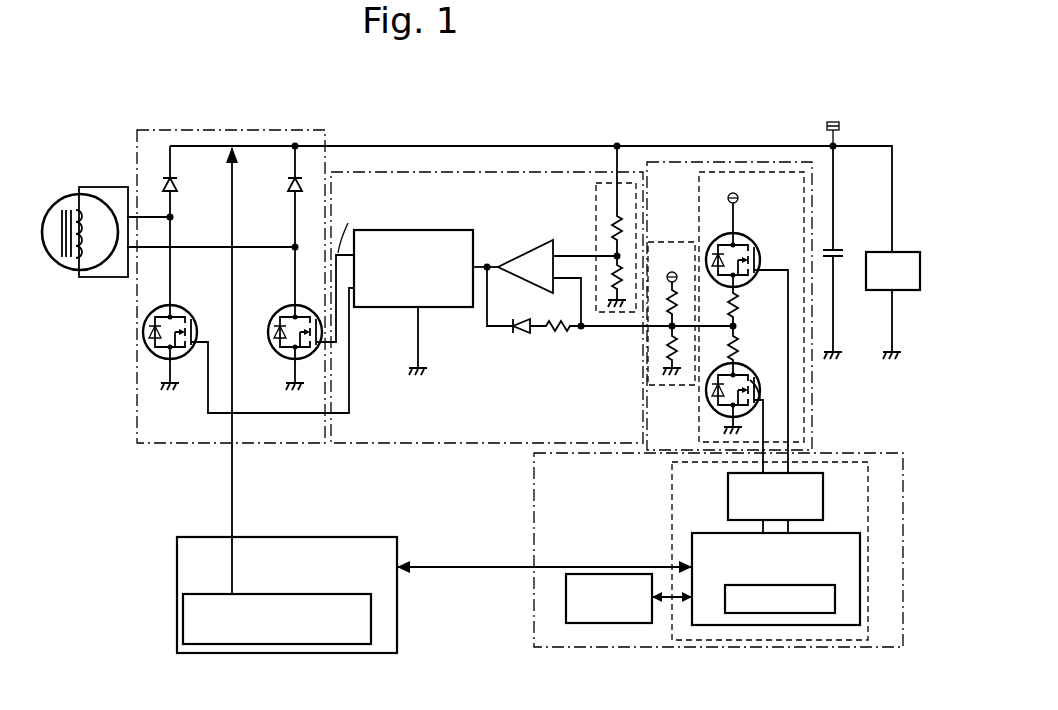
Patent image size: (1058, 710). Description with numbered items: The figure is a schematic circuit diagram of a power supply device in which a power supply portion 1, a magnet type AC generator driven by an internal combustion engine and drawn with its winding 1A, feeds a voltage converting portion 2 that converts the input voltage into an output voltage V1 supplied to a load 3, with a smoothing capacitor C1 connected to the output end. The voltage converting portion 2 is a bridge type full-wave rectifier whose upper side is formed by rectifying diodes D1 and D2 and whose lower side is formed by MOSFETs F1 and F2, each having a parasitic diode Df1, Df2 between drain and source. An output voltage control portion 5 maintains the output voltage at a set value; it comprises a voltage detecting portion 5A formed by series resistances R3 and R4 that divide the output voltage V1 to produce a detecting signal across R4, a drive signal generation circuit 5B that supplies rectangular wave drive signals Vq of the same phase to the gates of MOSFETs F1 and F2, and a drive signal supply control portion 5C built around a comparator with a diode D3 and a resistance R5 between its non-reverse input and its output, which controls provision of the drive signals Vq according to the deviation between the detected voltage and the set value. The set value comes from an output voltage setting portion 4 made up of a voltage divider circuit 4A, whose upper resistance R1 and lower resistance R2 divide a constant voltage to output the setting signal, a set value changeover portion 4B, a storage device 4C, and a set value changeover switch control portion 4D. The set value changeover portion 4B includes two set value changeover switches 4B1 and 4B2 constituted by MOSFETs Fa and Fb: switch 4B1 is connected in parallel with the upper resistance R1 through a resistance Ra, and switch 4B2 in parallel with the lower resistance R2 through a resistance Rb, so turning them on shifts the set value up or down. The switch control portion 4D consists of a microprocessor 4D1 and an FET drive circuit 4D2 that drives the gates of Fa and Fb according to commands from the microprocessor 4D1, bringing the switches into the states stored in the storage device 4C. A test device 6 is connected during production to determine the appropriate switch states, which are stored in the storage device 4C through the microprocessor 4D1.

The power supply portion 1 is at (57, 190).
The field coil 1A is at (82, 242).
The voltage converting portion 2 is at (244, 127).
The rectifying diode D1 is at (178, 181).
The rectifying diode D2 is at (287, 182).
The MOSFET F1 is at (178, 307).
The MOSFET F2 is at (277, 308).
The parasitic diode Df1 is at (143, 332).
The parasitic diode Df2 is at (270, 332).
The output voltage control portion 5 is at (385, 168).
The voltage detecting portion 5A is at (599, 181).
The drive signal generation circuit 5B is at (405, 229).
The drive signal supply control portion 5C is at (521, 257).
The resistance R3 is at (612, 227).
The resistance R4 is at (622, 292).
The resistance R5 is at (556, 333).
The diode D3 is at (523, 331).
The drive signals Vq is at (361, 274).
The output voltage setting portion 4 is at (532, 500).
The voltage divider circuit 4A is at (692, 240).
The set value changeover portion 4B is at (724, 170).
The set value changeover switch 4B1 is at (716, 232).
The set value changeover switch 4B2 is at (766, 389).
The storage device 4C is at (637, 624).
The set value changeover switch control portion 4D is at (762, 641).
The microprocessor 4D1 is at (692, 548).
The FET drive circuit 4D2 is at (728, 498).
The upper resistance R1 is at (666, 306).
The lower resistance R2 is at (676, 346).
The resistance Ra is at (740, 300).
The resistance Rb is at (742, 355).
The MOSFET Fa is at (750, 237).
The MOSFET Fb is at (758, 372).
The smoothing capacitor C1 is at (843, 252).
The output voltage V1 is at (857, 133).
The load 3 is at (870, 281).
The test device 6 is at (313, 535).